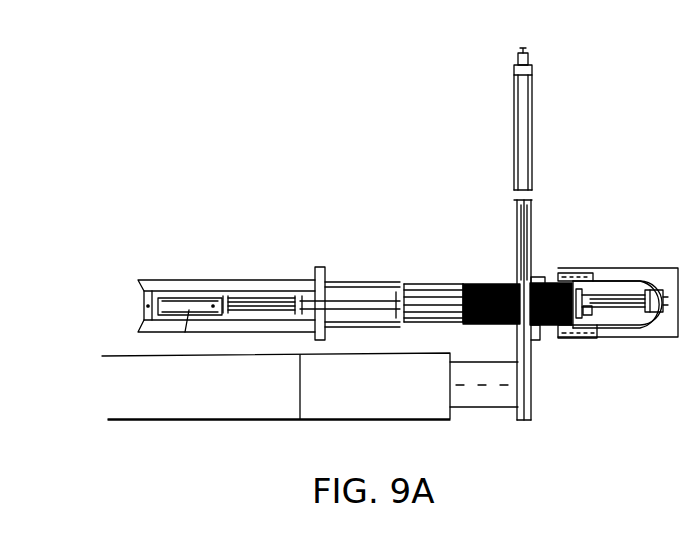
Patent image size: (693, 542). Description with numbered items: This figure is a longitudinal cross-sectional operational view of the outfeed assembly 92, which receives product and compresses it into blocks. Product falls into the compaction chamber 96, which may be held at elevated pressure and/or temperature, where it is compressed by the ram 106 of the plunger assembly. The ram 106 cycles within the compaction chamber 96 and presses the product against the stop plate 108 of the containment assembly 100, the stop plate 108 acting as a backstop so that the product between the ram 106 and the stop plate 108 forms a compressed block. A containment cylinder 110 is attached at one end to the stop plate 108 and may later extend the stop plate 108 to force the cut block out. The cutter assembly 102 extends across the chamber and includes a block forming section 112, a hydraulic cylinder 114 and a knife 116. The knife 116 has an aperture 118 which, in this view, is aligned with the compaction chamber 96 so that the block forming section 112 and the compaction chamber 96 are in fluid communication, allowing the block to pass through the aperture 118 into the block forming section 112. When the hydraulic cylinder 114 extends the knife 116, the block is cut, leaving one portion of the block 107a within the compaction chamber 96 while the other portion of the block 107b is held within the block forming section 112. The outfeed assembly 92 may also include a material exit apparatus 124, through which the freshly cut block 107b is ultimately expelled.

The outfeed assembly 92 is at (283, 121).
The compaction chamber 96 is at (469, 280).
The containment assembly 100 is at (636, 240).
The cutter assembly 102 is at (560, 134).
The ram 106 is at (417, 280).
The portion of the block within the chamber 107a is at (495, 280).
The portion of the block within the block forming section 107b is at (550, 280).
The stop plate 108 is at (586, 339).
The containment cylinder 110 is at (633, 308).
The block forming section 112 is at (542, 280).
The hydraulic cylinder 114 is at (532, 102).
The knife 116 is at (533, 280).
The aperture 118 is at (536, 327).
The material exit apparatus 124 is at (462, 455).